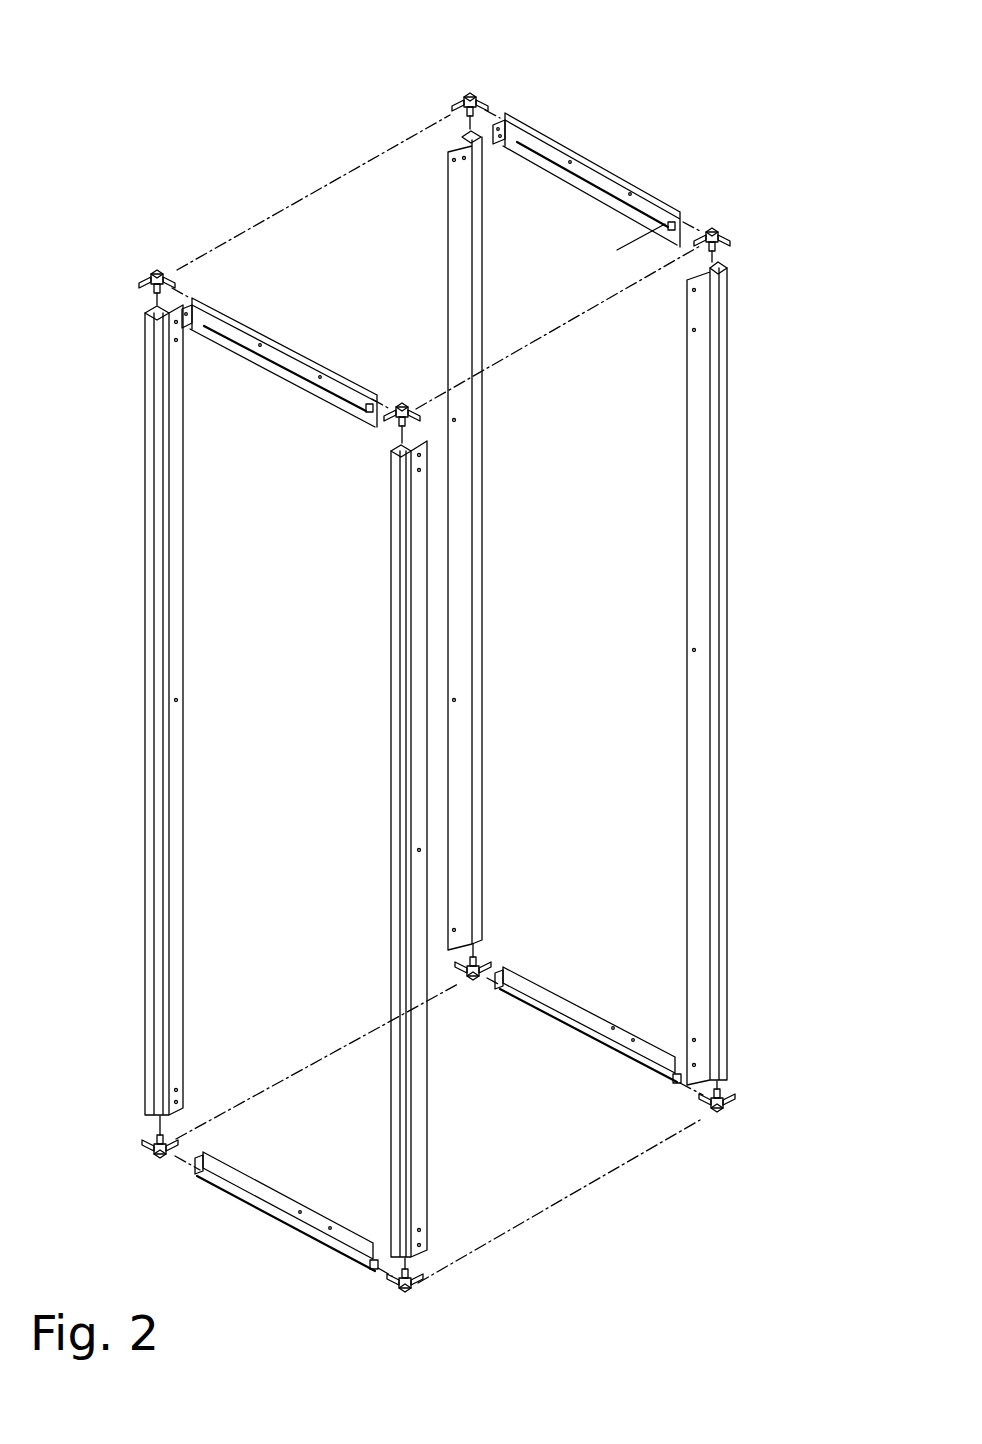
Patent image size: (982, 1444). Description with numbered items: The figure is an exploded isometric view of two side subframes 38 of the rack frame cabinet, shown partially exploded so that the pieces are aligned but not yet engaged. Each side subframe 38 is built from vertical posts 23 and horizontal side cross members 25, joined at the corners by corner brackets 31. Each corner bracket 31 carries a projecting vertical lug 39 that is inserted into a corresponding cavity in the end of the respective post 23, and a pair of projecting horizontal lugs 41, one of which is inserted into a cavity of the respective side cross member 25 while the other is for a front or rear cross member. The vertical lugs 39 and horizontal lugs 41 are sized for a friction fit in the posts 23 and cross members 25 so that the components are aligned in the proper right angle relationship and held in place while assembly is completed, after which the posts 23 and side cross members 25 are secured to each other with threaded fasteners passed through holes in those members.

The post 23 is at (470, 345).
The side cross member 25 is at (273, 343).
The corner bracket 31 is at (473, 98).
The side subframe 38 is at (667, 93).
The vertical lug 39 is at (722, 247).
The horizontal lug 41 is at (455, 100).